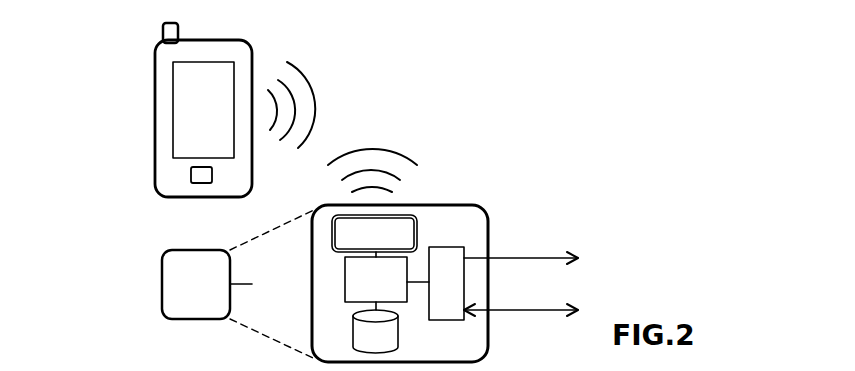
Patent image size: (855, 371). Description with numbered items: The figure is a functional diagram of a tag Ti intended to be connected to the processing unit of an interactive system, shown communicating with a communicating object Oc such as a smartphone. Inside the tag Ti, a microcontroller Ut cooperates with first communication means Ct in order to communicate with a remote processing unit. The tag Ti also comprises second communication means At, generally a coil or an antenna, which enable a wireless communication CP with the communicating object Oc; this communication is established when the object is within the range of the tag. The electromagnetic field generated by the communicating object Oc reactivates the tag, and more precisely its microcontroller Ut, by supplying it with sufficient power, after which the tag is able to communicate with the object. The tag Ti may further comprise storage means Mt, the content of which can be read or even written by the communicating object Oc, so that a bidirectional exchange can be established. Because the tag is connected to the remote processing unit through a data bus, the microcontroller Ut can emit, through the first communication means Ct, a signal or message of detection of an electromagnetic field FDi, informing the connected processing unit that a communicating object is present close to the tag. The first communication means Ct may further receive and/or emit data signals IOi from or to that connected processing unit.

The communicating object Oc is at (157, 137).
The wireless communication CP is at (342, 127).
The tag Ti is at (495, 156).
The second communication means At is at (374, 236).
The microcontroller Ut is at (387, 283).
The first communication means Ct is at (446, 283).
The storage means Mt is at (375, 331).
The signal of detection of an electromagnetic field FDi is at (521, 246).
The data signals IOi is at (521, 323).